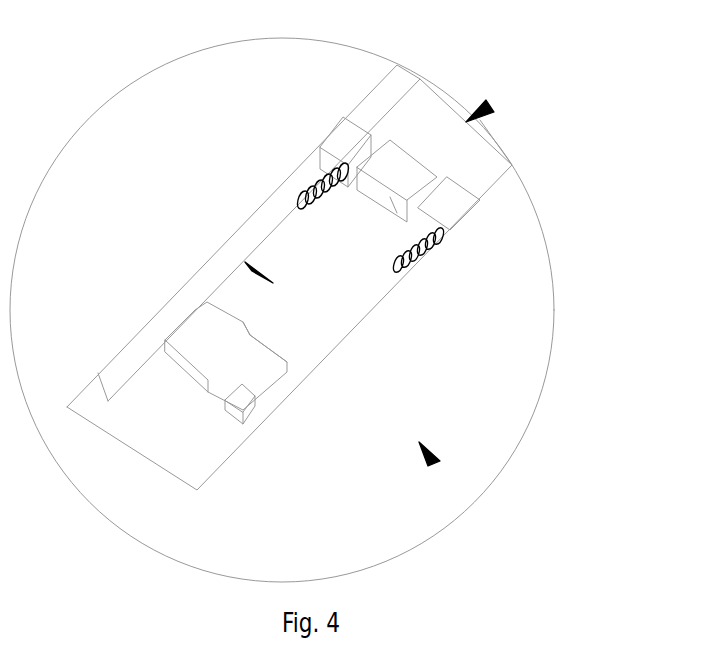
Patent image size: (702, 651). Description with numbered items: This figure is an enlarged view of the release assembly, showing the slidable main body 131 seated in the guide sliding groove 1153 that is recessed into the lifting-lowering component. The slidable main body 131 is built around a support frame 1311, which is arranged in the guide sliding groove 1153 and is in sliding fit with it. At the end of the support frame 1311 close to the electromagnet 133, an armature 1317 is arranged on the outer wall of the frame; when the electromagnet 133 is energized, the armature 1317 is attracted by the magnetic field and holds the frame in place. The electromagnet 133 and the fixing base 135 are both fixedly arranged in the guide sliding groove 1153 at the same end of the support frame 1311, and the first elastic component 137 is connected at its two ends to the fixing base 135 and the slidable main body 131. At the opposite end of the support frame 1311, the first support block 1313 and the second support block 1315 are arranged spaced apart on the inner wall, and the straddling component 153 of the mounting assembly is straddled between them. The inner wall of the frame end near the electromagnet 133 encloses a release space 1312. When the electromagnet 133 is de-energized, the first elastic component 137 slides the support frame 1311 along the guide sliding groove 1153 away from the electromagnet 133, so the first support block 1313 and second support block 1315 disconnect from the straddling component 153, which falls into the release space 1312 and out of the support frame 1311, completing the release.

The slidable main body 131 is at (436, 463).
The support frame 1311 is at (370, 300).
The release space 1312 is at (252, 271).
The first support block 1313 is at (212, 305).
The second support block 1315 is at (292, 365).
The armature 1317 is at (431, 233).
The electromagnet 133 is at (397, 165).
The fixing base 135 is at (338, 138).
The first elastic component 137 is at (307, 178).
The straddling component 153 is at (252, 395).
The guide sliding groove 1153 is at (490, 106).